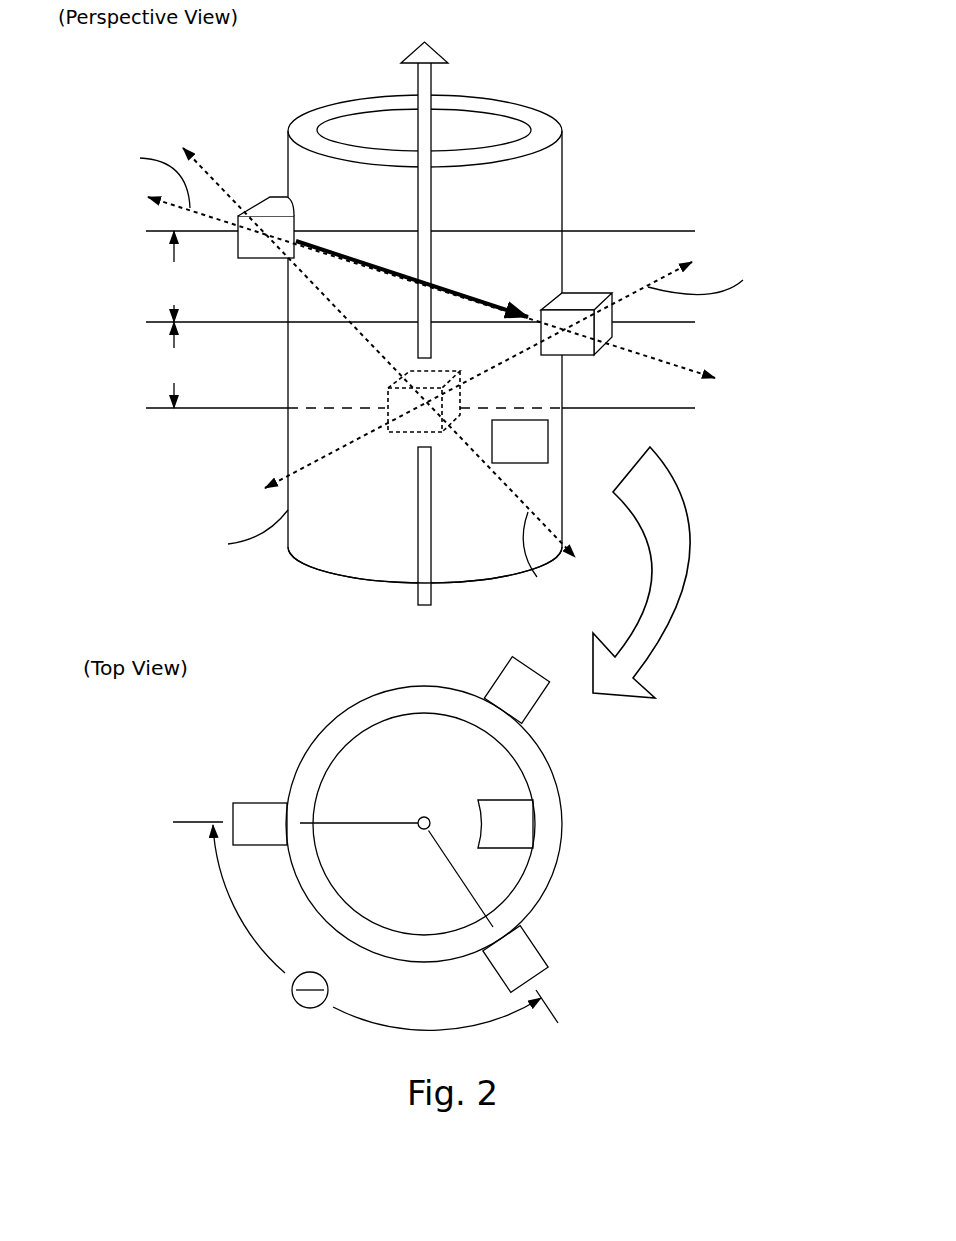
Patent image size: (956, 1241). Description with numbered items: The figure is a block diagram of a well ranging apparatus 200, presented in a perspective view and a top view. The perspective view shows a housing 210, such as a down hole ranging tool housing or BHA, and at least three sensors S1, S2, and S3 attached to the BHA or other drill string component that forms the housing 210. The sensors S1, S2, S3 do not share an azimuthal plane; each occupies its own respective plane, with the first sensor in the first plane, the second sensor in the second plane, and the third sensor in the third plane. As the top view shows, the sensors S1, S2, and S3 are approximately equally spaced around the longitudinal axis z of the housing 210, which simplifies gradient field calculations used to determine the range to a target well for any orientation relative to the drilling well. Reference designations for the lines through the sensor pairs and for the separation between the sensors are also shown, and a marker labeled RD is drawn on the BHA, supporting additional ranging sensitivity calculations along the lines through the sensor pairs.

The well ranging apparatus 200 is at (628, 70).
The housing 210 is at (562, 196).
The first sensor S1 is at (263, 522).
The second sensor S2 is at (547, 642).
The third sensor S3 is at (469, 547).
The reference direction marker RD is at (513, 634).
The bottom hole assembly BHA is at (425, 547).